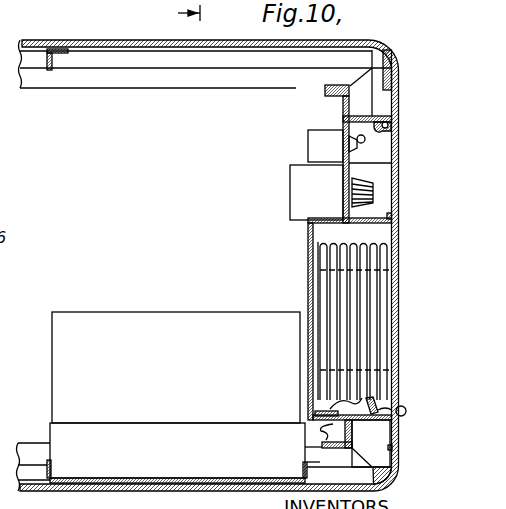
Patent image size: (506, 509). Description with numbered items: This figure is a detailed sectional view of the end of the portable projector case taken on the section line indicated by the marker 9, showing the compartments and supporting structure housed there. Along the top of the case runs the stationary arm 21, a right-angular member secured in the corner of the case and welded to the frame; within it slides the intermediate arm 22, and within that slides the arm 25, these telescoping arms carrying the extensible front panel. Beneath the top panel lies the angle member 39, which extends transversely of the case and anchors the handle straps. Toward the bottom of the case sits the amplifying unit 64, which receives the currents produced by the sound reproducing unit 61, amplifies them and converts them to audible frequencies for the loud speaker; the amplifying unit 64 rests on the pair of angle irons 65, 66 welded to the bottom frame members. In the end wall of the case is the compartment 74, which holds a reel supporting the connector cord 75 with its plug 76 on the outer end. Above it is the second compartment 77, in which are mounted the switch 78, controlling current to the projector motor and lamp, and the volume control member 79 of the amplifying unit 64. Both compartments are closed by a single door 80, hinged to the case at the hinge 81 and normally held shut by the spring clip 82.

The figure line 9 is at (183, 18).
The stationary arm 21 is at (328, 89).
The intermediate arm 22 is at (326, 96).
The arm 25 is at (338, 97).
The angle member 39 is at (52, 62).
The sound reproducing unit 61 is at (14, 6).
The amplifying unit 64 is at (150, 327).
The angle iron 65 is at (46, 462).
The angle iron 66 is at (303, 470).
The compartment 74 is at (306, 262).
The connector cord 75 is at (376, 295).
The plug 76 is at (380, 409).
The second compartment 77 is at (391, 163).
The switch 78 is at (352, 146).
The volume control member 79 is at (373, 198).
The door 80 is at (415, 329).
The hinge 81 is at (403, 417).
The spring clip 82 is at (377, 117).